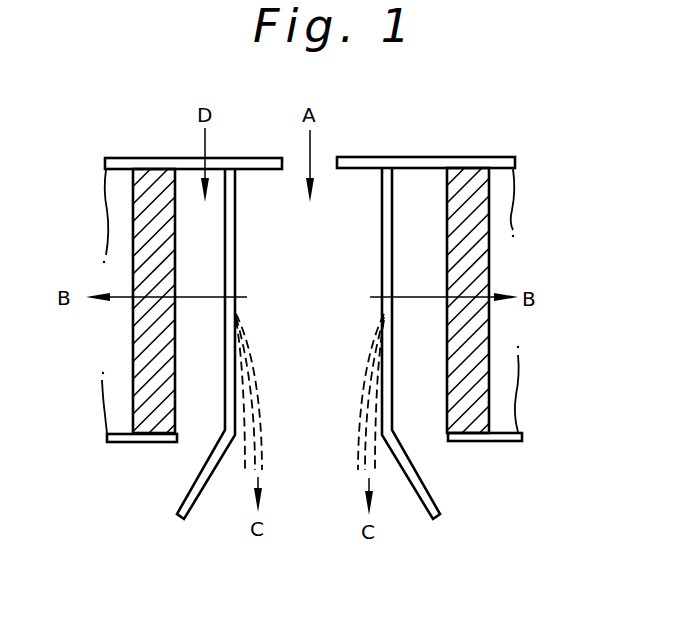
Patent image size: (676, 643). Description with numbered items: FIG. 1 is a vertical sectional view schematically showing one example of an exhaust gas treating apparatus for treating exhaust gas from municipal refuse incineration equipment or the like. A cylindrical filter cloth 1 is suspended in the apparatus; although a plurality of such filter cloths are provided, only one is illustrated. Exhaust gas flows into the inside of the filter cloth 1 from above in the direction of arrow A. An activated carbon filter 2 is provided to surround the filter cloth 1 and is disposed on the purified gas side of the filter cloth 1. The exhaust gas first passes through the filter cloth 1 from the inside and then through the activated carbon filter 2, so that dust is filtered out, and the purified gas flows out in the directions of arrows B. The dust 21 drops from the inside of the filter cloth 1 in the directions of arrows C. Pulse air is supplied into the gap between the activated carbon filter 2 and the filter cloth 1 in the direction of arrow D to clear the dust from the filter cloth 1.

The filter cloth 1 is at (365, 165).
The activated carbon filter 2 is at (447, 199).
The dust 21 is at (259, 384).